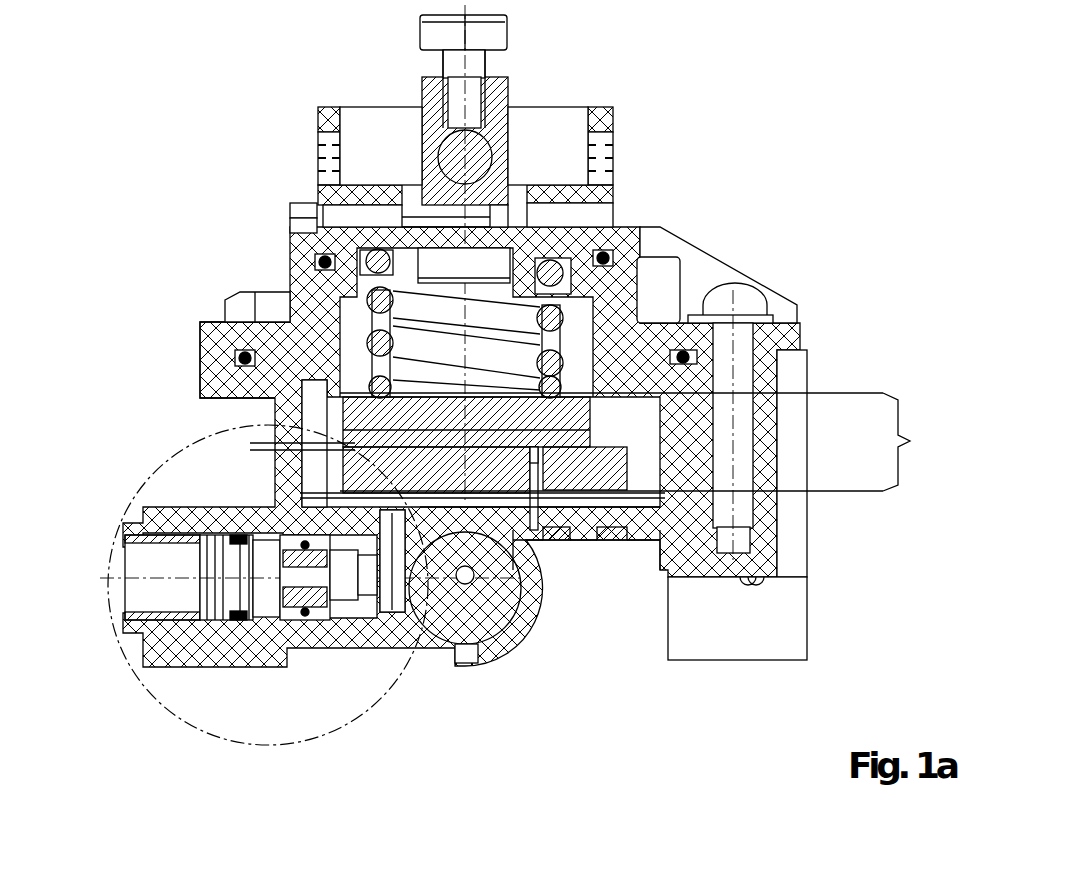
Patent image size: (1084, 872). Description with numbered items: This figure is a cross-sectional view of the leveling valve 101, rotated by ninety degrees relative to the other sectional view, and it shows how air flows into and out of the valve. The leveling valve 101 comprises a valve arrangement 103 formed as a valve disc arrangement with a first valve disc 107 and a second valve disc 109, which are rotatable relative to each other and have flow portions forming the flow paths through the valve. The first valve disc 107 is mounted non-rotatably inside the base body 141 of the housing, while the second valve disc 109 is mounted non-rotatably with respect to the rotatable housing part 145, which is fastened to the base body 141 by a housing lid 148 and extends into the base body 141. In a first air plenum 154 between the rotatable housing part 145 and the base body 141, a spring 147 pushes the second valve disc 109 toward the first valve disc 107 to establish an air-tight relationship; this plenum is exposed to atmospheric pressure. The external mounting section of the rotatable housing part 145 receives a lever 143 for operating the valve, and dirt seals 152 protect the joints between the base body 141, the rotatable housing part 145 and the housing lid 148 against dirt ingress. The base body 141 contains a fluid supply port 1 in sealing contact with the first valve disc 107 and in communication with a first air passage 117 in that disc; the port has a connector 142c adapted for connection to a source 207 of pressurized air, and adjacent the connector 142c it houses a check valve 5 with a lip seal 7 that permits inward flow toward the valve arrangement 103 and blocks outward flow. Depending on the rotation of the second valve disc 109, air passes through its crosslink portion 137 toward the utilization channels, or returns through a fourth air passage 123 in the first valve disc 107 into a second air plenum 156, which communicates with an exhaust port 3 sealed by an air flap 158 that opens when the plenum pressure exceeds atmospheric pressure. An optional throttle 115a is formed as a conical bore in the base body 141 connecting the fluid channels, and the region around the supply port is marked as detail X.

The leveling valve 101 is at (207, 86).
The valve arrangement 103 is at (650, 442).
The first valve disc 107 is at (352, 470).
The second valve disc 109 is at (395, 420).
The throttle 115a is at (486, 597).
The first air passage 117 is at (568, 449).
The fourth air passage 123 is at (533, 449).
The crosslink portion 137 is at (476, 406).
The base body 141 is at (207, 368).
The connector 142c is at (140, 593).
The lever 143 is at (482, 147).
The rotatable housing part 145 is at (335, 107).
The spring 147 is at (554, 262).
The housing lid 148 is at (748, 285).
The dirt seal 152 is at (608, 257).
The first air plenum 154 is at (352, 322).
The second air plenum 156 is at (652, 476).
The air flap 158 is at (613, 545).
The source of pressurized air 207 is at (110, 578).
The fluid supply port 1 is at (397, 556).
The exhaust port 3 is at (539, 512).
The check valve 5 is at (343, 605).
The lip seal 7 is at (298, 608).
The detail region X is at (192, 722).